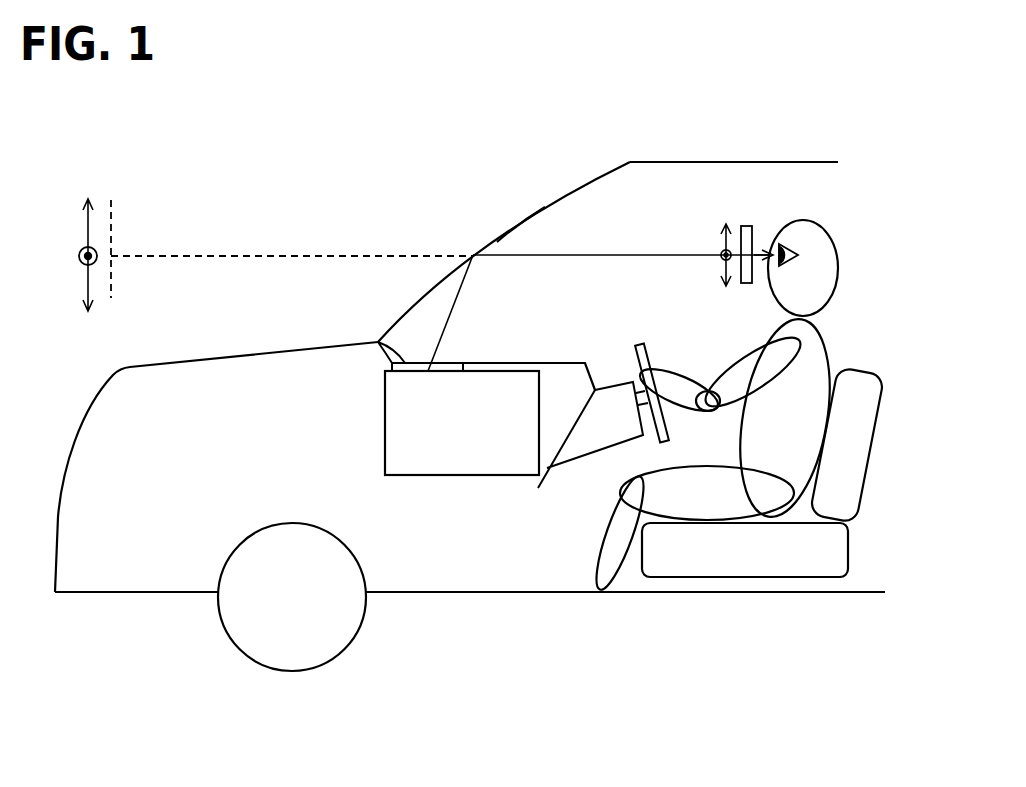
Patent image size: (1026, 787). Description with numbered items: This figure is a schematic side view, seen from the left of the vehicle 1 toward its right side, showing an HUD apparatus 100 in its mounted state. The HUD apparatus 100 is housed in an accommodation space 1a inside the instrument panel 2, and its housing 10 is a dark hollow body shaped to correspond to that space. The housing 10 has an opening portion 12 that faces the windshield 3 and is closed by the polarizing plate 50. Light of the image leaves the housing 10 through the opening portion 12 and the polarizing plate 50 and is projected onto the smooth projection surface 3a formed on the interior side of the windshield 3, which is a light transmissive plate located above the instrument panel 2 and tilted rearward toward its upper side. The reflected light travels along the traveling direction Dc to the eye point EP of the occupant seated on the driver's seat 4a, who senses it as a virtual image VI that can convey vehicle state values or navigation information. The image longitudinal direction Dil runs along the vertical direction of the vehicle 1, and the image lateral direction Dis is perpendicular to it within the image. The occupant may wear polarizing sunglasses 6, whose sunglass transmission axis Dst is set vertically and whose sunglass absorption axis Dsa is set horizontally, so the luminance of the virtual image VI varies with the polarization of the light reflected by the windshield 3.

The vehicle 1 is at (812, 162).
The accommodation space 1a is at (385, 455).
The instrument panel 2 is at (557, 363).
The windshield 3 is at (407, 311).
The projection surface 3a is at (514, 238).
The driver's seat 4a is at (848, 548).
The polarizing sunglasses 6 is at (746, 226).
The housing 10 is at (385, 418).
The opening portion 12 is at (460, 365).
The polarizing plate 50 is at (378, 343).
The HUD apparatus 100 is at (419, 403).
The eye point EP is at (785, 240).
The virtual image VI is at (118, 213).
The image longitudinal direction Dil is at (88, 245).
The image lateral direction Dis is at (81, 264).
The sunglass absorption axis Dsa is at (722, 254).
The sunglass transmission axis Dst is at (722, 240).
The traveling direction Dc is at (757, 250).